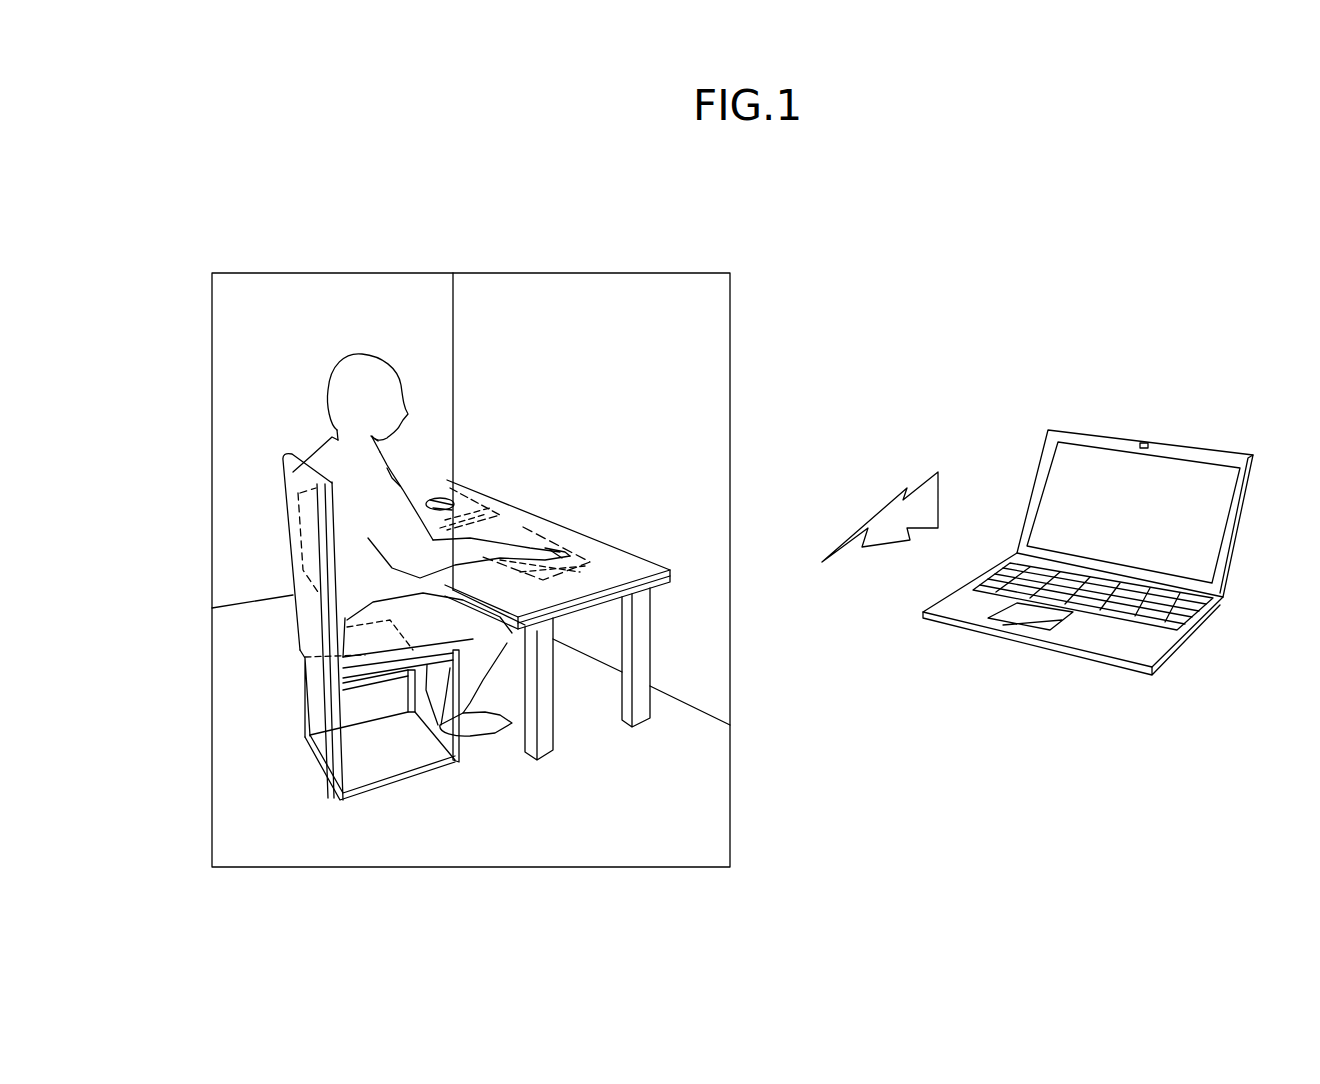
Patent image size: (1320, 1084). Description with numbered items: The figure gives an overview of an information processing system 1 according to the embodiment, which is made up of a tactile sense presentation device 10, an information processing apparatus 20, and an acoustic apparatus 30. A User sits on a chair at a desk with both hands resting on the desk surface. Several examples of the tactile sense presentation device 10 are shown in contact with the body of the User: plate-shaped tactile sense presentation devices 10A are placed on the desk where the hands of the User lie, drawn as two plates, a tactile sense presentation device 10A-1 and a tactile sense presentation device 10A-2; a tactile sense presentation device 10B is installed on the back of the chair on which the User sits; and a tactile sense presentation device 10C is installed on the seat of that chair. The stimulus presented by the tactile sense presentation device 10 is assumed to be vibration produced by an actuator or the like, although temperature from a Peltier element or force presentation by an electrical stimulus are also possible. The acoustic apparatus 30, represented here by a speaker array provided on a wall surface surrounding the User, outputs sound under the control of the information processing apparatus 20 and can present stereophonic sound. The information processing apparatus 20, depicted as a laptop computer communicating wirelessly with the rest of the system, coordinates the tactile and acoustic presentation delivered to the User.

The information processing system 1 is at (1156, 270).
The tactile sense presentation device 10 is at (502, 786).
The tactile sense presentation devices 10A is at (657, 492).
The tactile sense presentation device 10A-1 is at (482, 508).
The tactile sense presentation device 10A-2 is at (572, 554).
The tactile sense presentation device 10B is at (298, 520).
The tactile sense presentation device 10C is at (305, 658).
The information processing apparatus 20 is at (1210, 447).
The acoustic apparatus 30 is at (622, 362).
The user User is at (316, 444).